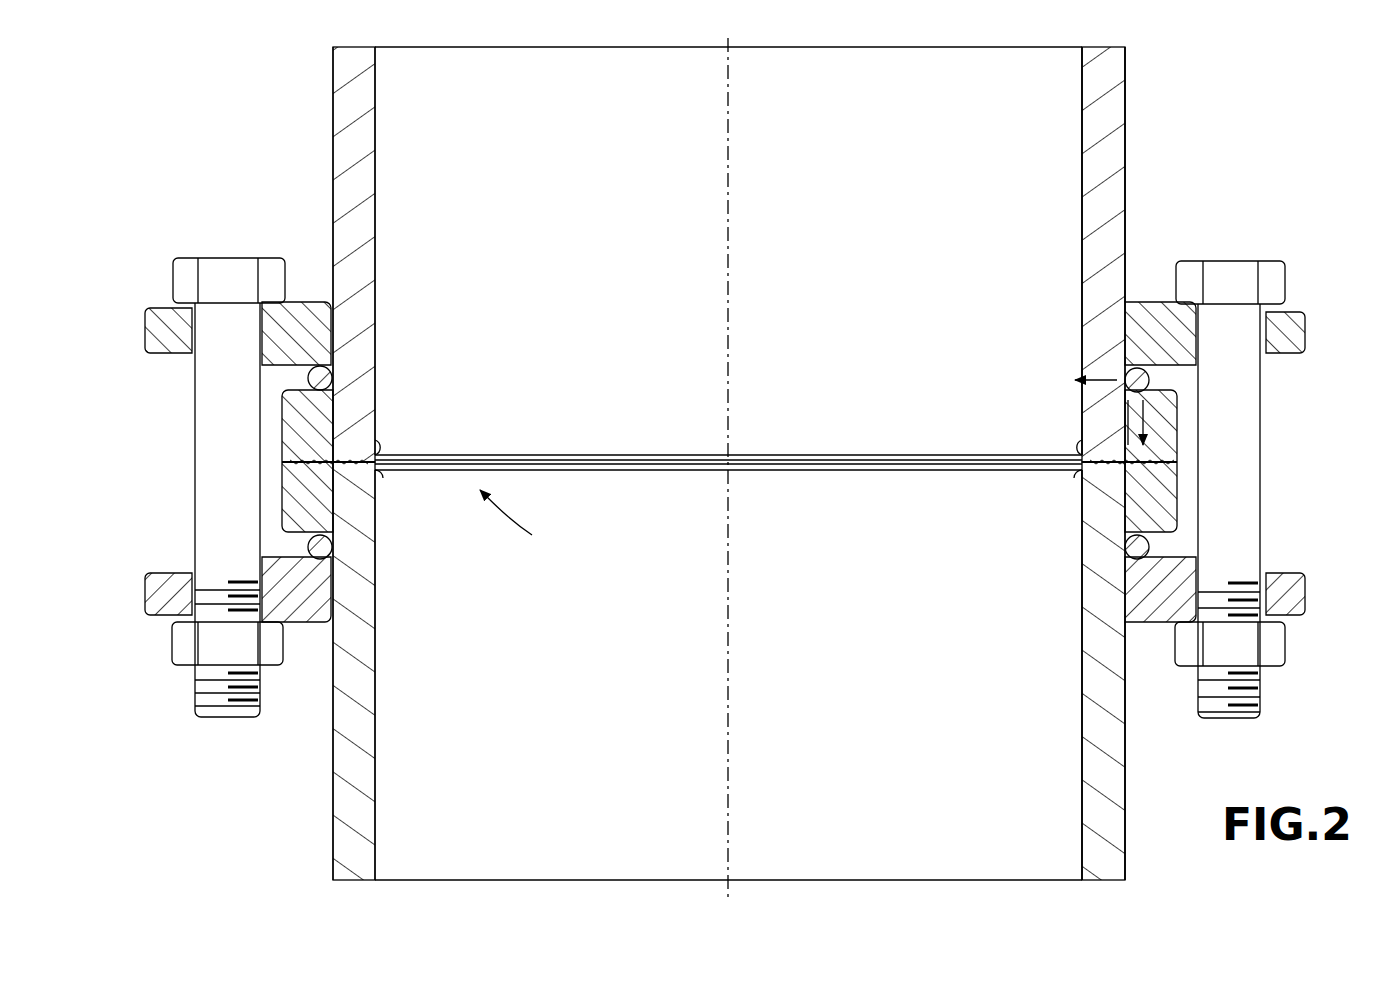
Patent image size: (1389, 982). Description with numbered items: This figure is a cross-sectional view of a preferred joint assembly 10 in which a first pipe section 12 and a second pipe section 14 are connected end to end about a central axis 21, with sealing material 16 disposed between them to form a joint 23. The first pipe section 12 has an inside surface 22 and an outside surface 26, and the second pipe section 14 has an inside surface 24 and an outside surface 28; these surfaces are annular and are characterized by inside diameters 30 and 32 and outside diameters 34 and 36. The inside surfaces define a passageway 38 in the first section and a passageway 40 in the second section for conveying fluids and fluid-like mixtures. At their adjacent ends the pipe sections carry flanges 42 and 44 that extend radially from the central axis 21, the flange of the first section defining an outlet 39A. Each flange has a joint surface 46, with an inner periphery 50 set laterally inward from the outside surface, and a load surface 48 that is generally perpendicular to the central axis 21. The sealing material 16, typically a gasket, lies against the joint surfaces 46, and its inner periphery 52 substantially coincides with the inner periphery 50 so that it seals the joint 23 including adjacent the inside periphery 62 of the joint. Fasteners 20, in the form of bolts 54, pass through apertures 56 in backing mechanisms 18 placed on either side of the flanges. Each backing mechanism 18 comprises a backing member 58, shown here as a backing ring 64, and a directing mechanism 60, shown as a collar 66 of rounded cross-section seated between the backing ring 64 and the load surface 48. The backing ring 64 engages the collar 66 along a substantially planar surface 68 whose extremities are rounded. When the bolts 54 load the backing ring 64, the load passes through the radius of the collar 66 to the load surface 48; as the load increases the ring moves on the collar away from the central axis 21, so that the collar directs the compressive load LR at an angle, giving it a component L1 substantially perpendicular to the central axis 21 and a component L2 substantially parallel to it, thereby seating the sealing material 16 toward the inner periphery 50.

The joint assembly 10 is at (1277, 120).
The first pipe section 12 is at (1115, 132).
The second pipe section 14 is at (1112, 795).
The sealing material 16 is at (282, 462).
The backing mechanism 18 is at (310, 680).
The fastener 20 is at (195, 505).
The central axis 21 is at (735, 112).
The inside surface of first pipe section 22 is at (1082, 140).
The joint 23 is at (400, 498).
The inside surface of second pipe section 24 is at (1082, 790).
The outside surface of first pipe section 26 is at (1125, 172).
The outside surface of second pipe section 28 is at (1125, 753).
The inside diameter of first pipe section 30 is at (376, 70).
The inside diameter of second pipe section 32 is at (376, 858).
The outside diameter of first pipe section 34 is at (332, 70).
The outside diameter of second pipe section 36 is at (332, 858).
The passageway of first pipe section 38 is at (850, 202).
The outlet of first pipe section 39A is at (985, 445).
The passageway of second pipe section 40 is at (850, 687).
The flange of first pipe section 42 is at (290, 420).
The flange of second pipe section 44 is at (1170, 505).
The joint surface 46 is at (318, 455).
The load surface 48 is at (305, 374).
The inner periphery of joint surface 50 is at (376, 445).
The inner periphery of sealing material 52 is at (380, 470).
The bolt 54 is at (1260, 384).
The aperture 56 is at (1248, 330).
The backing member 58 is at (150, 598).
The directing mechanism 60 is at (1152, 383).
The inside periphery of joint 62 is at (374, 483).
The backing ring 64 is at (158, 310).
The collar 66 is at (1150, 547).
The planar surface 68 is at (308, 547).
The load component perpendicular to central axis L1 is at (1103, 378).
The compressive load vector LR is at (1082, 405).
The load component parallel to central axis L2 is at (1168, 408).